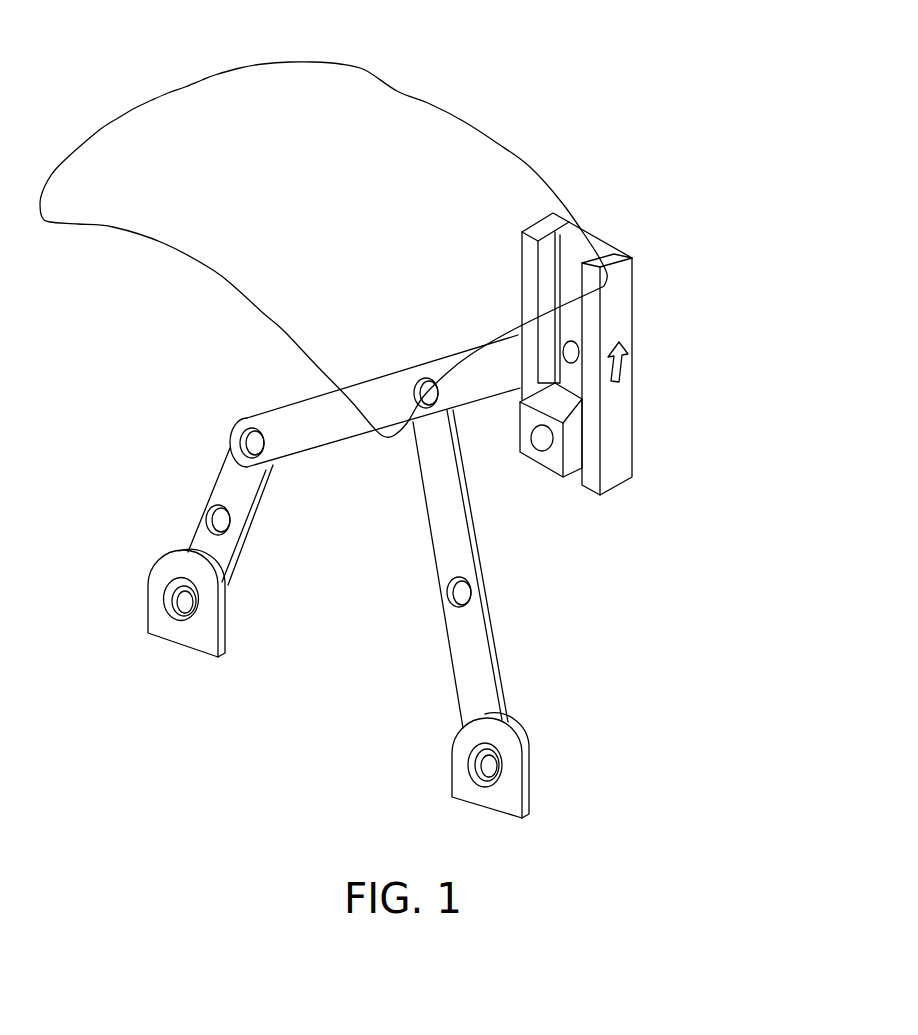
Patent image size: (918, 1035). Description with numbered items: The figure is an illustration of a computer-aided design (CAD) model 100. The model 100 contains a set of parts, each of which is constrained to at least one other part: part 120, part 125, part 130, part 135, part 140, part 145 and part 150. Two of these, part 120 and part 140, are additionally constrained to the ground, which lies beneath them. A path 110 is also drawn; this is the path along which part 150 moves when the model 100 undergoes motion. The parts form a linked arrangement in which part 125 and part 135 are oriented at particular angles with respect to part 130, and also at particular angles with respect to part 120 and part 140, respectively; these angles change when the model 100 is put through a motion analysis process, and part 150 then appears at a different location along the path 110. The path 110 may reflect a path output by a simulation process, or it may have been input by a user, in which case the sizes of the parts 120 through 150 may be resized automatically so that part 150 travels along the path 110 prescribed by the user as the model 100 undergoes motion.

The CAD model 100 is at (672, 129).
The path 110 is at (250, 68).
The part 120 is at (160, 597).
The part 125 is at (200, 548).
The part 130 is at (322, 430).
The part 135 is at (480, 676).
The part 140 is at (523, 792).
The part 145 is at (543, 463).
The part 150 is at (625, 410).